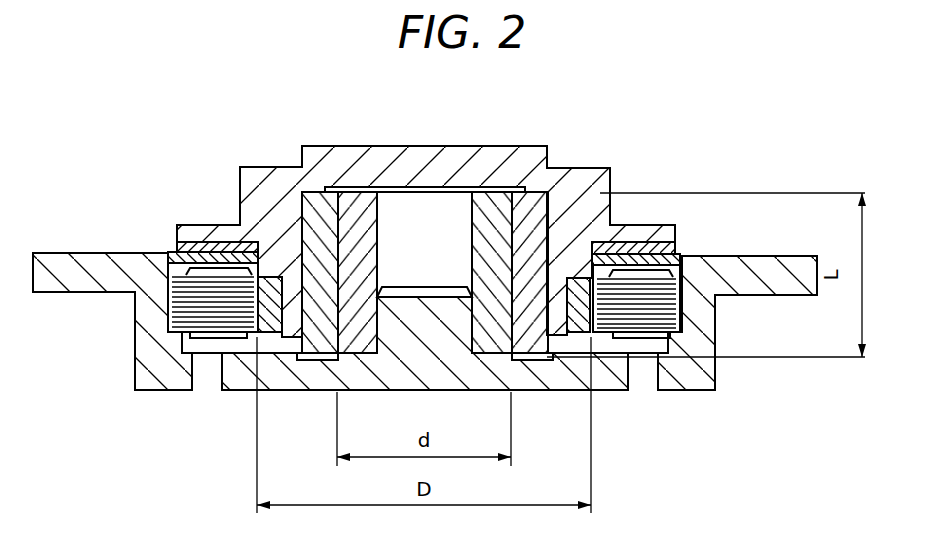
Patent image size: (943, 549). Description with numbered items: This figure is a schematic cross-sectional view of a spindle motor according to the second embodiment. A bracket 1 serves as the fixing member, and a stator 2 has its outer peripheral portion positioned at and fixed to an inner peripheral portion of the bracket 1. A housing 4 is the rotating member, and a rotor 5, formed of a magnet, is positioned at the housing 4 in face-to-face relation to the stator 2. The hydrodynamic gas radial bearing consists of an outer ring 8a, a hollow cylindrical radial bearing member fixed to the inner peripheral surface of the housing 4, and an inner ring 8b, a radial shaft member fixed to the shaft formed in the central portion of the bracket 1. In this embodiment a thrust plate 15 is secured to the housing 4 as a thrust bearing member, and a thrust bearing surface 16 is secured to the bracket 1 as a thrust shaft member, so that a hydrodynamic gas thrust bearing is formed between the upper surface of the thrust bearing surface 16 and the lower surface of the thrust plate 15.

The bracket 1 is at (762, 290).
The stator 2 is at (203, 318).
The housing 4 is at (501, 146).
The rotor 5 is at (270, 322).
The outer ring 8a is at (323, 340).
The inner ring 8b is at (360, 340).
The thrust plate 15 is at (216, 246).
The thrust bearing surface 16 is at (188, 250).